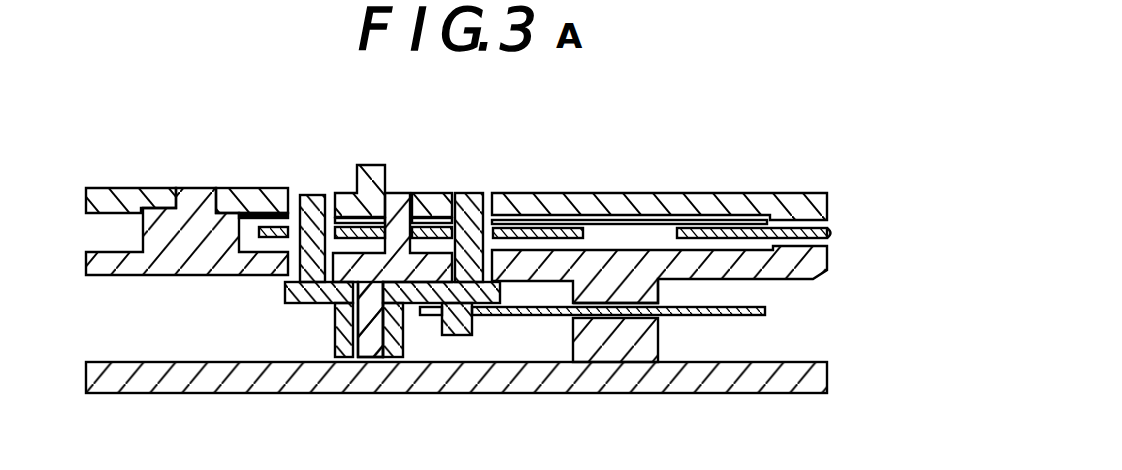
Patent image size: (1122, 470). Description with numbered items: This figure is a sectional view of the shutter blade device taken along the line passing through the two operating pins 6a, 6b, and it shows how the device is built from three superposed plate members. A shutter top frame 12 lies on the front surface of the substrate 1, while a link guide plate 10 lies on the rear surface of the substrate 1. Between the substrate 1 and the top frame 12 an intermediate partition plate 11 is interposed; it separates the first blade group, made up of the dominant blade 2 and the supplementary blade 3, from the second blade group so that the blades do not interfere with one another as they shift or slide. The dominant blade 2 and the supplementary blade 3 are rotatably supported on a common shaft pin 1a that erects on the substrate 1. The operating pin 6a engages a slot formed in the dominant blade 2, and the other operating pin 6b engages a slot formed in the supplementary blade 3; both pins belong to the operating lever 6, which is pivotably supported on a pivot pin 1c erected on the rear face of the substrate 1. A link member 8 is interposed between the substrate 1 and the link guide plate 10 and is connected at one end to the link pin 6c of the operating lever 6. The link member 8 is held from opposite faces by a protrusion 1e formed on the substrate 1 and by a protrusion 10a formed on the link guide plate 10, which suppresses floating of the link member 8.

The substrate 1 is at (830, 262).
The common shaft pin 1a is at (394, 192).
The pivot pin 1c is at (368, 360).
The protrusion 1e is at (658, 290).
The dominant blade 2 is at (682, 228).
The supplementary blade 3 is at (634, 220).
The operating lever 6 is at (302, 303).
The operating pin 6a is at (470, 193).
The operating pin 6b is at (318, 195).
The link pin 6c is at (467, 335).
The link member 8 is at (767, 311).
The link guide plate 10 is at (744, 394).
The protrusion 10a is at (658, 338).
The intermediate partition plate 11 is at (832, 231).
The shutter top frame 12 is at (801, 193).